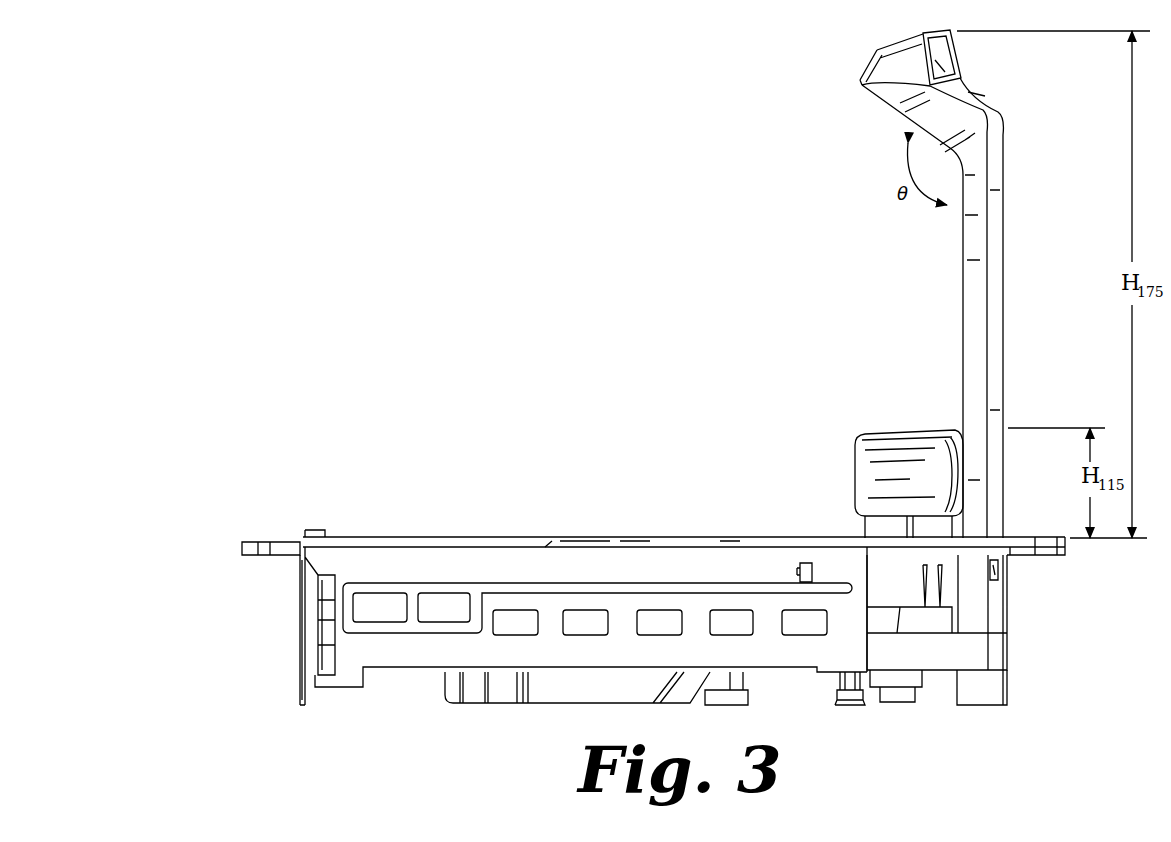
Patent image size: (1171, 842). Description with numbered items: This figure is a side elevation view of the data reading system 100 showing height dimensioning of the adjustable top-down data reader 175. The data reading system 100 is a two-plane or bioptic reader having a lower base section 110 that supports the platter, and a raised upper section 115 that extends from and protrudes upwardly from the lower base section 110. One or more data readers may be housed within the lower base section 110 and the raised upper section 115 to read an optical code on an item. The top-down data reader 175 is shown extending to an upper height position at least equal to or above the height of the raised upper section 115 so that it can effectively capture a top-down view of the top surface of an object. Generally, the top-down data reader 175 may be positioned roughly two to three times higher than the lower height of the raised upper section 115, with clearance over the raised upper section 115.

The data reading system 100 is at (670, 397).
The lower base section 110 is at (308, 615).
The raised upper section 115 is at (858, 440).
The top-down data reader 175 is at (1005, 197).